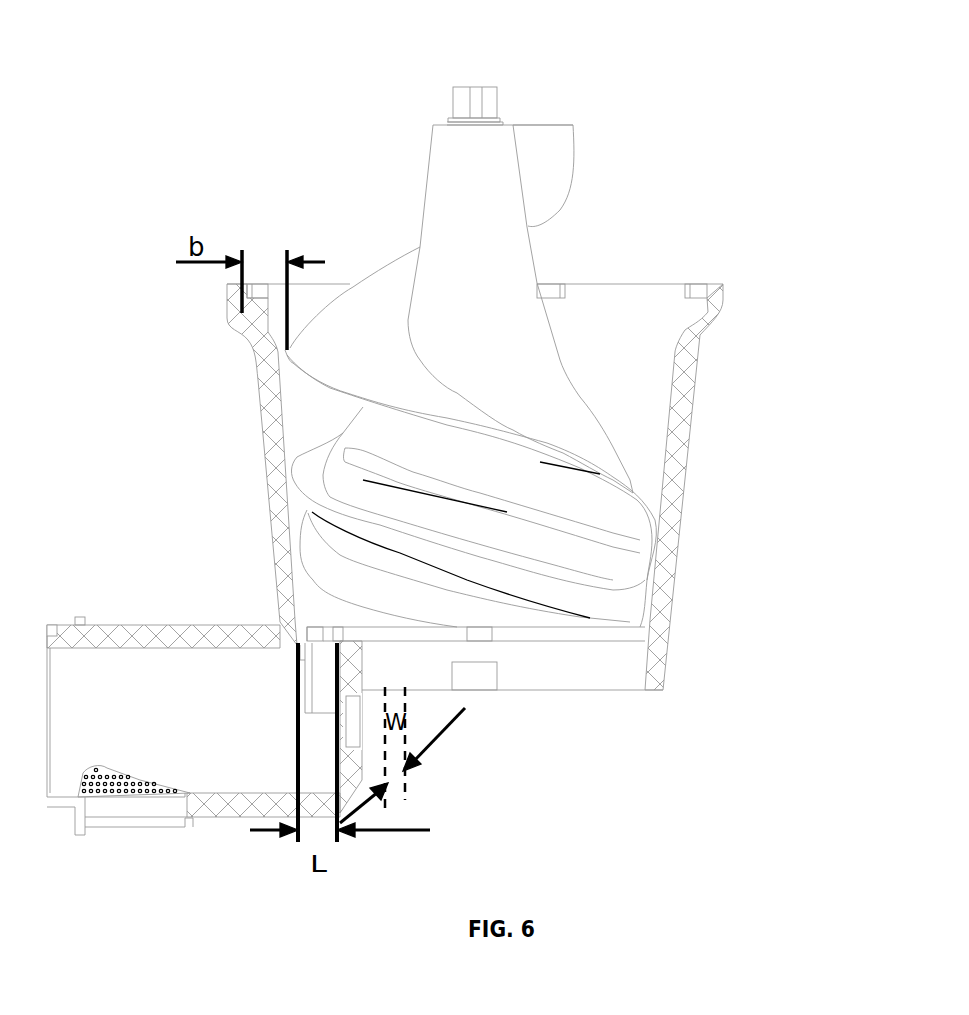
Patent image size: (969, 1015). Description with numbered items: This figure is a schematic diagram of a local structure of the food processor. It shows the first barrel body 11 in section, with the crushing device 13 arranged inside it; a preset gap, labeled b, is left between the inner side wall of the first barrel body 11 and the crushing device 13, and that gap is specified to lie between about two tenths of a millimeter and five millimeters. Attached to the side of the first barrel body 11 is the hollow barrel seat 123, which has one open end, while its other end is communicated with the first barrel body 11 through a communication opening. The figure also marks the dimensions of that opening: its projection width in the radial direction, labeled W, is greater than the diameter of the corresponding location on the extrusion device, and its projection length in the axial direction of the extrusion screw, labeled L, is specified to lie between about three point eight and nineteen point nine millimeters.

The first barrel body 11 is at (676, 434).
The crushing device 13 is at (570, 572).
The barrel seat 123 is at (194, 632).